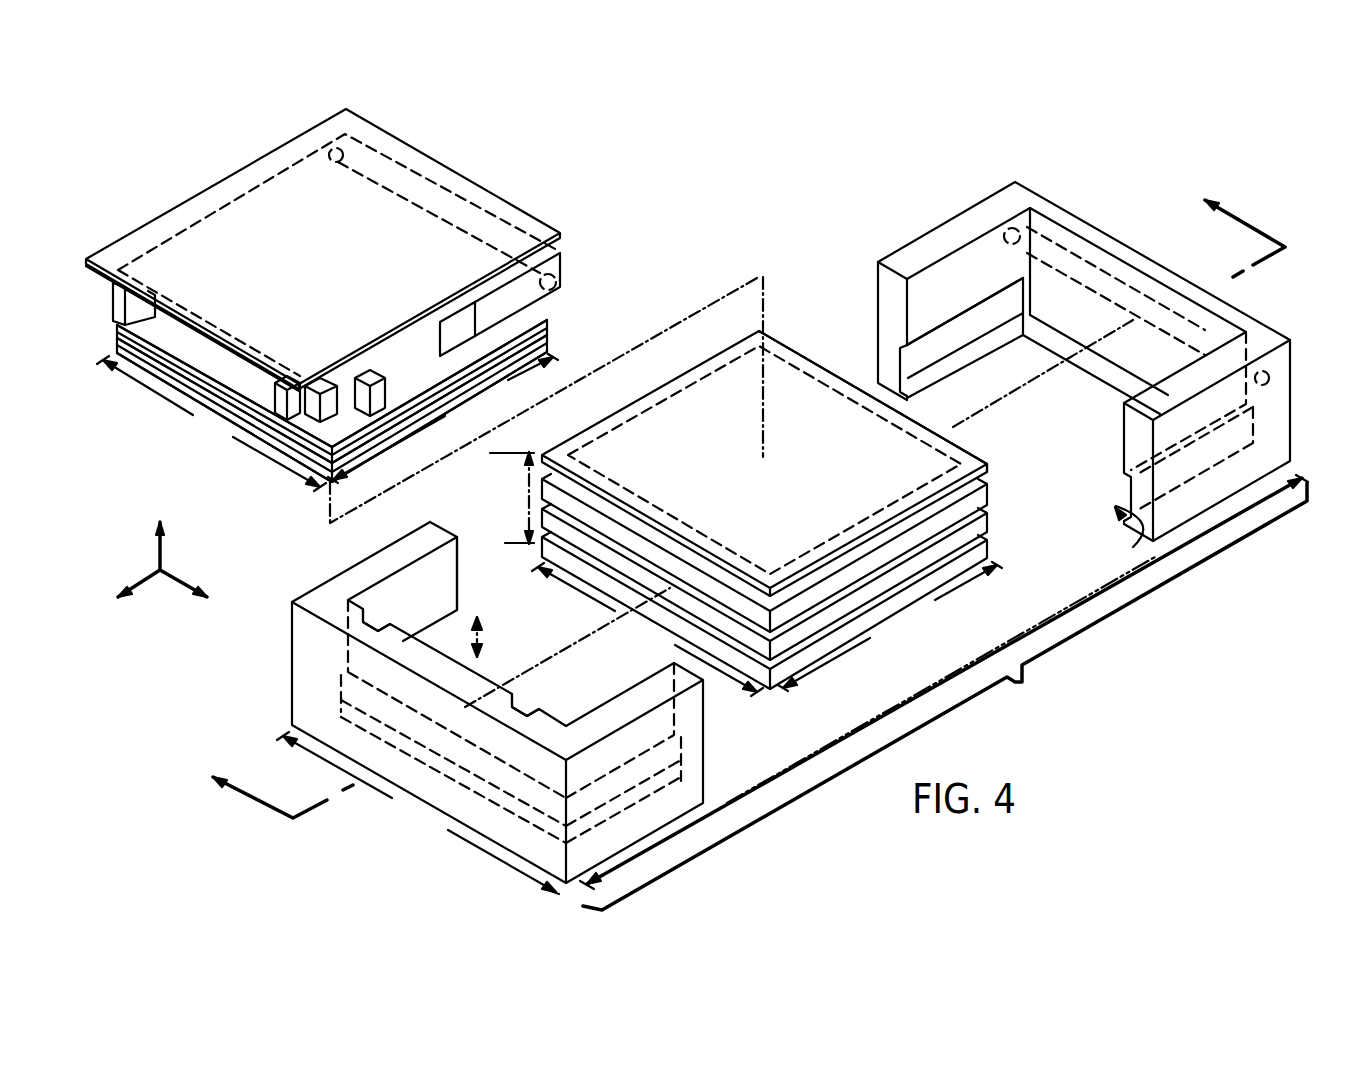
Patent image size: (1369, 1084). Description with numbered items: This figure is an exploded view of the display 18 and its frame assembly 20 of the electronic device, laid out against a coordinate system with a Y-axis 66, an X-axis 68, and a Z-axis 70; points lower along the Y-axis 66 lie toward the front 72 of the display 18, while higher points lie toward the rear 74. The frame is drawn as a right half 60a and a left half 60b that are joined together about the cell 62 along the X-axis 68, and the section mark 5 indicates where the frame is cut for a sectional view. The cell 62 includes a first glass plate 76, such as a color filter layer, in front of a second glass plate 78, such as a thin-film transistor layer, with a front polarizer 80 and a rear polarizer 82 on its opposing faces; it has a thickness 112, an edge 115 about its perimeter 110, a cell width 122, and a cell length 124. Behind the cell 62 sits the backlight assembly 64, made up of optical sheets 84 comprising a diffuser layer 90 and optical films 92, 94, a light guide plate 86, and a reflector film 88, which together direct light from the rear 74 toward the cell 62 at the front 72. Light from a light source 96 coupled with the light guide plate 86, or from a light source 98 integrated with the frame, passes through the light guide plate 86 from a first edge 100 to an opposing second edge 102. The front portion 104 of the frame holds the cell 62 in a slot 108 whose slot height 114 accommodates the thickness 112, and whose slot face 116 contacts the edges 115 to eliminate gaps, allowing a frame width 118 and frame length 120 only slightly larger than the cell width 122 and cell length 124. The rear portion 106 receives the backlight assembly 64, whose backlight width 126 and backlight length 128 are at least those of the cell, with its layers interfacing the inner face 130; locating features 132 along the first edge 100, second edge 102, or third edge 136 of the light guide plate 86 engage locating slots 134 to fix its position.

The section line 5- 5 is at (744, 495).
The display 18 is at (768, 155).
The frame assembly 20 is at (944, 692).
The right half 60a is at (945, 222).
The left half 60b is at (330, 595).
The cell 62 is at (480, 453).
The backlight assembly 64 is at (603, 227).
The Y-axis 66 is at (158, 553).
The X-axis 68 is at (143, 590).
The Z-axis 70 is at (182, 575).
The front 72 is at (995, 602).
The rear 74 is at (155, 145).
The first glass plate 76 is at (990, 524).
The second glass plate 78 is at (988, 478).
The front polarizer 80 is at (990, 553).
The rear polarizer 82 is at (822, 368).
The optical sheets 84 is at (552, 320).
The light guide plate 86 is at (113, 290).
The reflector film 88 is at (455, 168).
The diffuser layer 90 is at (117, 325).
The optical film 92 is at (117, 338).
The optical film 94 is at (117, 352).
The light source 96 is at (565, 266).
The light source 98 is at (1293, 358).
The first edge 100 is at (561, 250).
The second edge 102 is at (197, 307).
The front portion 104 is at (490, 623).
The rear portion 106 is at (458, 540).
The slot 108 is at (950, 347).
The perimeter 110 is at (782, 357).
The thickness 112 is at (527, 512).
The slot height 114 is at (486, 630).
The edge 115 is at (994, 500).
The slot face 116 is at (1130, 545).
The frame width 118 is at (418, 813).
The frame length 120 is at (944, 682).
The cell width 122 is at (647, 629).
The cell length 124 is at (890, 626).
The backlight width 126 is at (211, 423).
The backlight length 128 is at (443, 418).
The inner face 130 is at (425, 577).
The locating features 132 is at (290, 382).
The locating slots 134 is at (553, 716).
The third edge 136 is at (468, 312).